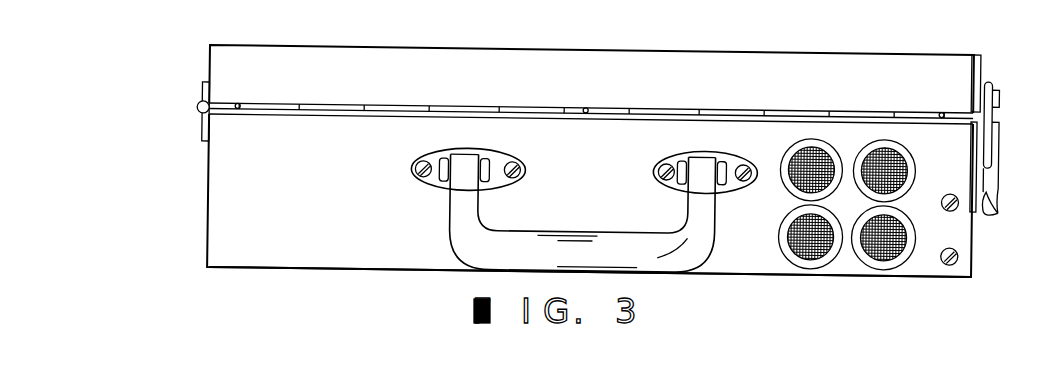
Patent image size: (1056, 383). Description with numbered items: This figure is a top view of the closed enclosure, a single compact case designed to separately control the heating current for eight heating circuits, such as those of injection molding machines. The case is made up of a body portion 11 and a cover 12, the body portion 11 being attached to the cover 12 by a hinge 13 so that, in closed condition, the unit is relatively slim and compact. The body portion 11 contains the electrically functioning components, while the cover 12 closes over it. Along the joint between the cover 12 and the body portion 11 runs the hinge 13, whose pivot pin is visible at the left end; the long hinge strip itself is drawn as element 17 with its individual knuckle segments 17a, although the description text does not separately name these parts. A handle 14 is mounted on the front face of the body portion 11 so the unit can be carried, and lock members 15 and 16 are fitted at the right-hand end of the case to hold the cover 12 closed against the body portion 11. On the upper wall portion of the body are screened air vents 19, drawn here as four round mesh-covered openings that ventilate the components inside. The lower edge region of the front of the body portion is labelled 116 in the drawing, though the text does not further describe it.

The body portion 11 is at (228, 200).
The cover 12 is at (395, 57).
The hinge 13 is at (198, 107).
The handle 14 is at (609, 240).
The lock member 15 is at (993, 175).
The lock member 16 is at (996, 86).
The hinge 17 is at (327, 113).
The hinge knuckles 17a is at (240, 103).
The screened air vents 19 is at (830, 224).
The front panel 116 is at (760, 241).